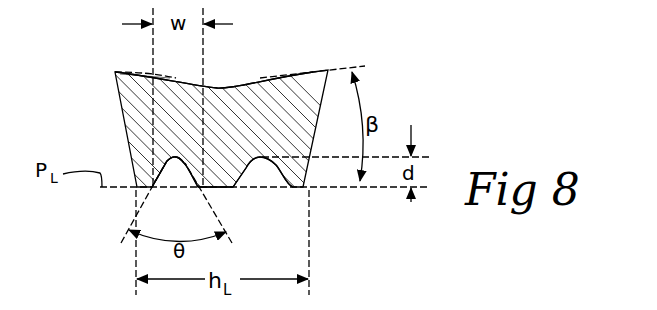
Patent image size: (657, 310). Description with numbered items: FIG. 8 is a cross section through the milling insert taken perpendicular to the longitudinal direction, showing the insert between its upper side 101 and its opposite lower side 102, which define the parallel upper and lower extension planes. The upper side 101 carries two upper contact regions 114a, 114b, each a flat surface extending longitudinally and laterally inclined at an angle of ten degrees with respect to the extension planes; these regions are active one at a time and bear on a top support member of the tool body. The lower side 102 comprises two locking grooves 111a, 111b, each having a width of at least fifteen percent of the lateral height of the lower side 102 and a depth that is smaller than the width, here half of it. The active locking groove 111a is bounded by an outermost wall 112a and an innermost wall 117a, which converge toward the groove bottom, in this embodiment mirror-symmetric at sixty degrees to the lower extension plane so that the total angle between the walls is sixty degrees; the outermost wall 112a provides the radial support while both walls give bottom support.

The upper side 101 is at (238, 66).
The lower side 102 is at (234, 196).
The active locking groove 111a is at (178, 166).
The locking groove 111b is at (258, 158).
The outermost wall 112a is at (165, 180).
The active upper contact region 114a is at (260, 78).
The upper contact region 114b is at (178, 80).
The innermost wall 117a is at (175, 172).